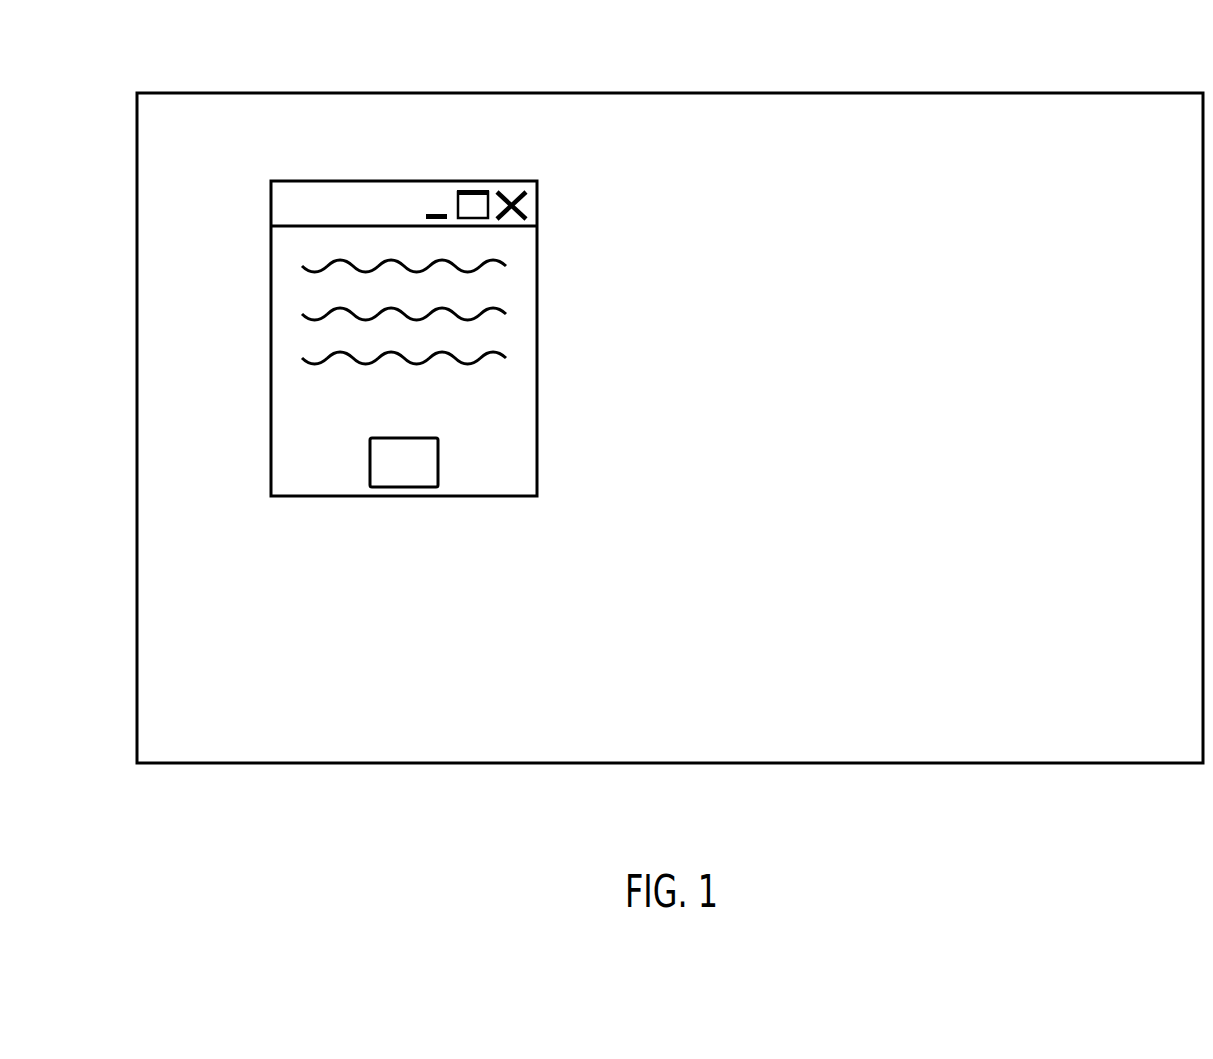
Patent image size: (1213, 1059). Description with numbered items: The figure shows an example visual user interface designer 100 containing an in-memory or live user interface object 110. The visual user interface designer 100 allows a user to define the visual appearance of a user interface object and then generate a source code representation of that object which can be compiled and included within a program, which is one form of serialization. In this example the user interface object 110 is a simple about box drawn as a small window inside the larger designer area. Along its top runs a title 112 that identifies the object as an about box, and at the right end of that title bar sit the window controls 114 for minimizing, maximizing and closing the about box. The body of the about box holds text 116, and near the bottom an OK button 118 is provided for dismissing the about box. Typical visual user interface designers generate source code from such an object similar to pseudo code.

The visual user interface designer 100 is at (1069, 113).
The user interface object 110 is at (562, 248).
The title 112 is at (280, 207).
The window controls 114 is at (536, 172).
The text 116 is at (260, 251).
The OK button 118 is at (441, 460).